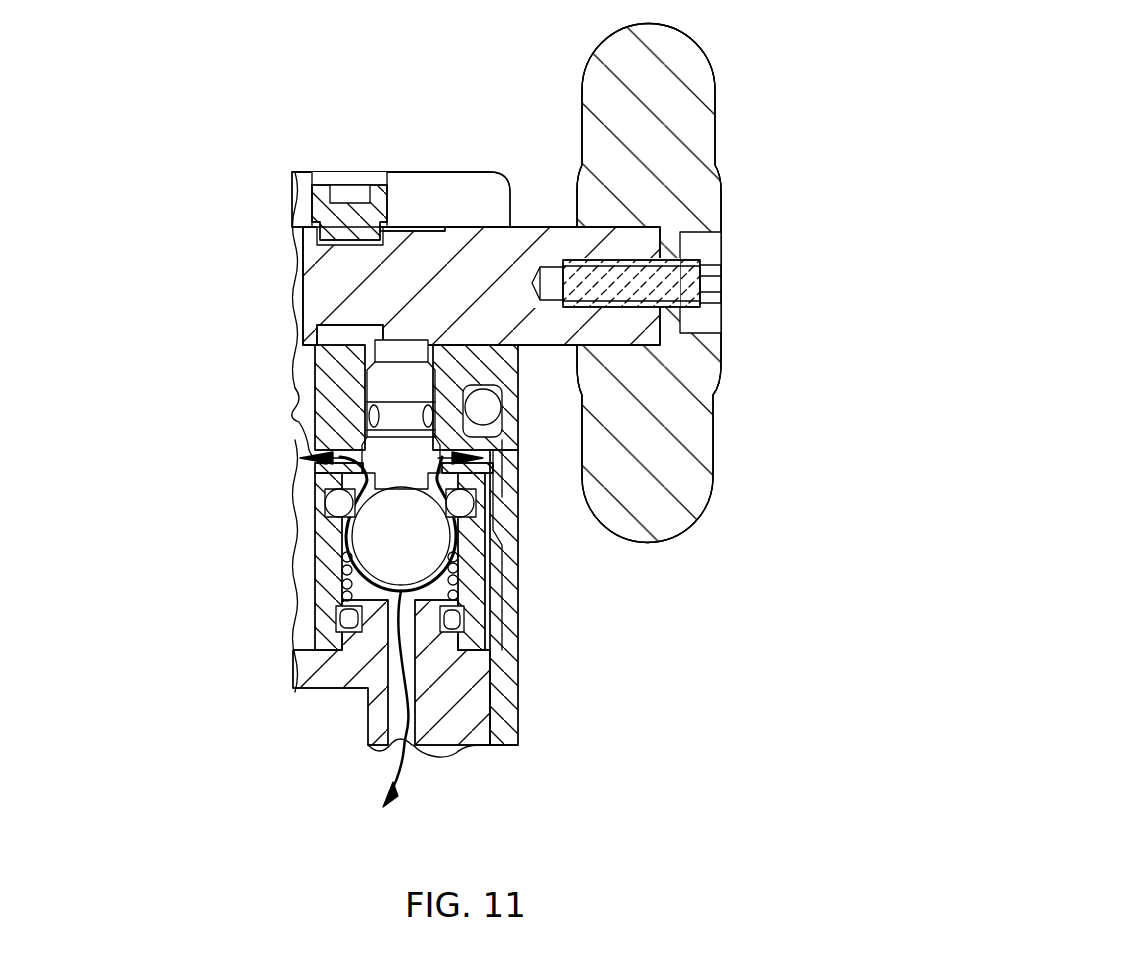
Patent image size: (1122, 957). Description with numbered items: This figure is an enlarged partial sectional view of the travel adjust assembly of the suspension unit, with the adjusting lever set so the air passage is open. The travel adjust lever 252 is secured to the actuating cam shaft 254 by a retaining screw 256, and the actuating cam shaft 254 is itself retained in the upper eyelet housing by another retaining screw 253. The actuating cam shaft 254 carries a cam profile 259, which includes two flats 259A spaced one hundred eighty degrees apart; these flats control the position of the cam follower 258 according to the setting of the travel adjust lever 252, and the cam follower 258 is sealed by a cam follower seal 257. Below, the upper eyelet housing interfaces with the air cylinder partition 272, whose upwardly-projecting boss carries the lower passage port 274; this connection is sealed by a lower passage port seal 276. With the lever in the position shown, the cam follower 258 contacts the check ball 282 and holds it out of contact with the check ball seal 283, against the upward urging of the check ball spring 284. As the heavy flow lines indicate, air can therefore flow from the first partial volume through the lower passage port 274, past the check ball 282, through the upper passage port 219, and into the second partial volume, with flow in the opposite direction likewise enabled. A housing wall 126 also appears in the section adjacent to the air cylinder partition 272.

The travel adjust lever 252 is at (673, 125).
The retaining screw 253 is at (343, 220).
The actuating cam shaft 254 is at (337, 287).
The retaining screw 256 is at (727, 310).
The cam follower seal 257 is at (375, 413).
The cam follower 258 is at (397, 390).
The cam profile 259 is at (392, 390).
The flats 259A is at (412, 230).
The upper passage port 219 is at (317, 455).
The check ball 282 is at (412, 547).
The check ball seal 283 is at (343, 505).
The check ball spring 284 is at (455, 580).
The lower passage port seal 276 is at (345, 618).
The housing wall 126 is at (508, 687).
The air cylinder partition 272 is at (460, 728).
The lower passage port 274 is at (397, 720).